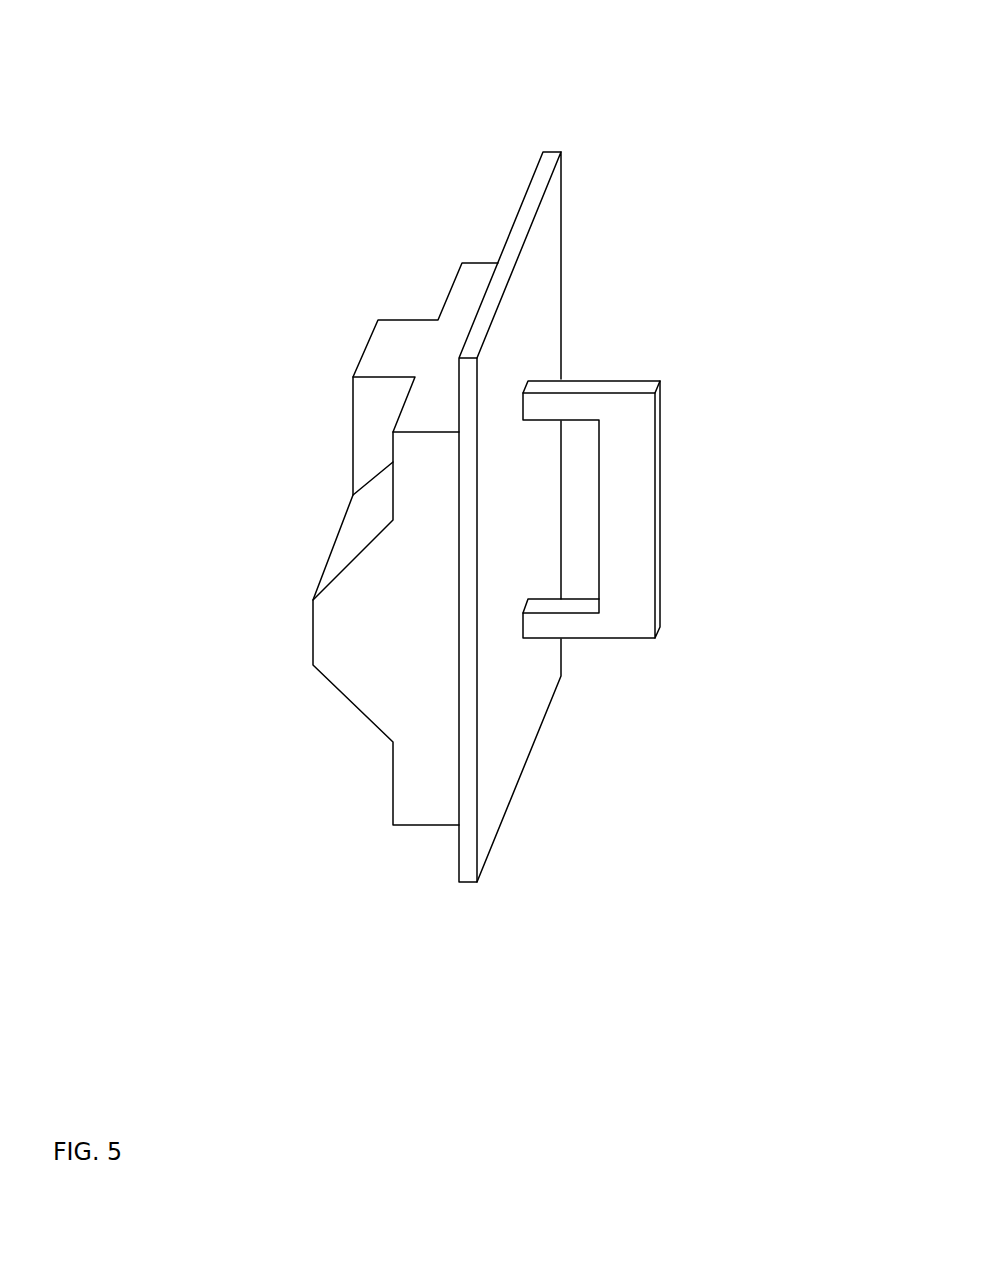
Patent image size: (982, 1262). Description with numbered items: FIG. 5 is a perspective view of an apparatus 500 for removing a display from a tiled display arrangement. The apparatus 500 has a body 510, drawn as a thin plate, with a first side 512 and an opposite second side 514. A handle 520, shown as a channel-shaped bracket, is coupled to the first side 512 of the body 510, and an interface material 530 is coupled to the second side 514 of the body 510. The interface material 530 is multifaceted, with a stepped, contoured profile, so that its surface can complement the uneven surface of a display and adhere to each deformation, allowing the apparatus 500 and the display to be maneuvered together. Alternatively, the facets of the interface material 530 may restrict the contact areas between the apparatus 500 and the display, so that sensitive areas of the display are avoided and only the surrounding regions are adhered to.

The apparatus 500 is at (233, 127).
The body 510 is at (542, 180).
The first side 512 is at (543, 292).
The second side 514 is at (503, 248).
The handle 520 is at (637, 517).
The interface material 530 is at (383, 583).